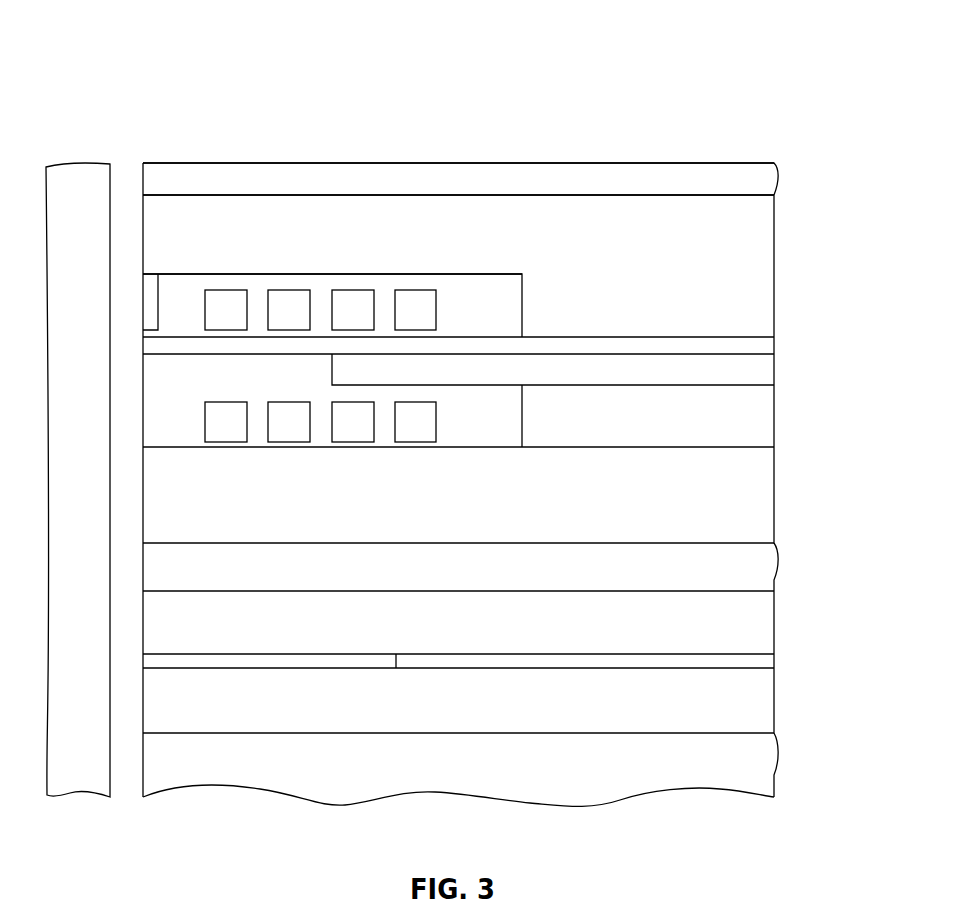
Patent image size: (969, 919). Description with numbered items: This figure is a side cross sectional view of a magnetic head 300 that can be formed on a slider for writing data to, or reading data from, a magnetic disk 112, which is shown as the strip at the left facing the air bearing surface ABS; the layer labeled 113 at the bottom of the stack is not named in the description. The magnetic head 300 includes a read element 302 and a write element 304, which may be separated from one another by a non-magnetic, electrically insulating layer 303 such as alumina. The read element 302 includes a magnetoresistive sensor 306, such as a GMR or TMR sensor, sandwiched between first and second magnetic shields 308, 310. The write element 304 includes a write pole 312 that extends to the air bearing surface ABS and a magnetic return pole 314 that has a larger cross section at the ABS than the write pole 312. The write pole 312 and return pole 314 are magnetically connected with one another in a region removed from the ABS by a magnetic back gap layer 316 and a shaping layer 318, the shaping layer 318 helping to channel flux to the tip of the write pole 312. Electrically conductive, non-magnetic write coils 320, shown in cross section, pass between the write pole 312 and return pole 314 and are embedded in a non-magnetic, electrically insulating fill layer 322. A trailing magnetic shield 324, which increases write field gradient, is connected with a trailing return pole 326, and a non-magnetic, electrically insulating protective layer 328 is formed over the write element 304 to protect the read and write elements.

The magnetic disk 112 is at (97, 164).
The substrate 113 is at (412, 763).
The magnetic head 300 is at (601, 164).
The read element 302 is at (782, 732).
The non-magnetic, electrically insulating layer 303 is at (490, 565).
The write element 304 is at (782, 543).
The magnetoresistive sensor 306 is at (245, 662).
The first magnetic shield 308 is at (472, 700).
The second magnetic shield 310 is at (495, 617).
The write pole 312 is at (175, 346).
The magnetic return pole 314 is at (500, 508).
The magnetic back gap layer 316 is at (585, 415).
The shaping layer 318 is at (467, 372).
The write coils 320 is at (402, 298).
The non-magnetic, electrically insulating fill layer 322 is at (482, 290).
The trailing magnetic shield 324 is at (150, 293).
The trailing return pole 326 is at (450, 226).
The non-magnetic, electrically insulating protective layer 328 is at (450, 180).
The air bearing surface ABS is at (143, 225).